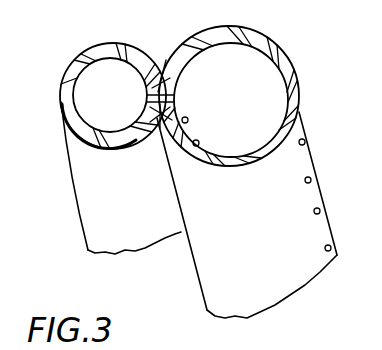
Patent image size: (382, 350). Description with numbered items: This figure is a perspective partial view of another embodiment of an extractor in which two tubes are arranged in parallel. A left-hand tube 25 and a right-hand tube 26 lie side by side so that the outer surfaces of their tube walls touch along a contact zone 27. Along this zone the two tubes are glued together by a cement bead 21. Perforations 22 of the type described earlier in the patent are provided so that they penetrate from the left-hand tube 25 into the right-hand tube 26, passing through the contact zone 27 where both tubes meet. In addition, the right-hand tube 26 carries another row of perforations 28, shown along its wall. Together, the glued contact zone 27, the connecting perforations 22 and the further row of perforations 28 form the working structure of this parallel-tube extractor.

The cement bead 21 is at (162, 84).
The perforations 22 is at (150, 97).
The left-hand tube 25 is at (69, 199).
The right-hand tube 26 is at (313, 152).
The contact zone 27 is at (134, 148).
The row of perforations 28 is at (291, 138).